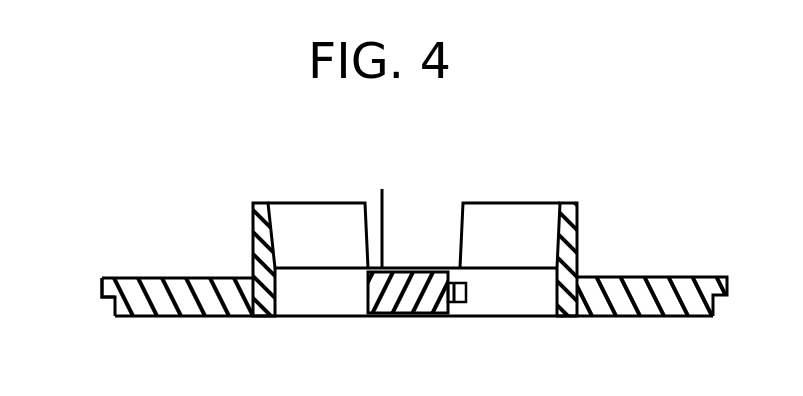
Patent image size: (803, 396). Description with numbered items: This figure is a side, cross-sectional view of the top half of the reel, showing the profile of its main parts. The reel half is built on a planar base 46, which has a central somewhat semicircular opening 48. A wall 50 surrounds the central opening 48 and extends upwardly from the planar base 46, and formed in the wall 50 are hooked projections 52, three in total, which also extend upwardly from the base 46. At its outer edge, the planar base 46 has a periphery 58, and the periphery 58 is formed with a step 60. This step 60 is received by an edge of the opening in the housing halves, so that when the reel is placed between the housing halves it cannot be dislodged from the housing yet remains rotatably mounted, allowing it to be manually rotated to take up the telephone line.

The planar base 46 is at (203, 298).
The central opening 48 is at (485, 300).
The wall 50 is at (523, 215).
The hooked projections 52 is at (428, 197).
The periphery 58 is at (102, 289).
The step 60 is at (115, 307).